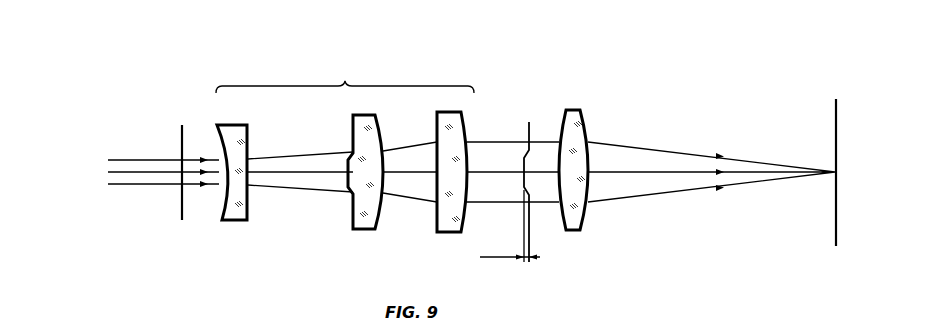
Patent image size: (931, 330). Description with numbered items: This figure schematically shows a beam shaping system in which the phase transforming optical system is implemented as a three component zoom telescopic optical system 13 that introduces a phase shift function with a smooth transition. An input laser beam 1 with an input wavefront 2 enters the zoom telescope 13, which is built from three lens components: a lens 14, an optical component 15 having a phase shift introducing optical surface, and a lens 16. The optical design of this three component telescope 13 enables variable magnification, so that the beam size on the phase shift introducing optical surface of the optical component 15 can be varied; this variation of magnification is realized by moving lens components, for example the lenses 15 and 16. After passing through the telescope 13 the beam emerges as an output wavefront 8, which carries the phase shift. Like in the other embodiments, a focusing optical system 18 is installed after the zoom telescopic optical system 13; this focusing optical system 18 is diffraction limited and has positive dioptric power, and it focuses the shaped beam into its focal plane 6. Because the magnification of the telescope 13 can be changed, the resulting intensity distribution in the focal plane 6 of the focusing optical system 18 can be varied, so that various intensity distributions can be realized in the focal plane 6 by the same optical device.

The input laser beam 1 is at (120, 192).
The input wavefront 2 is at (182, 218).
The three component zoom telescopic optical system 13 is at (345, 82).
The lens 14 is at (238, 219).
The optical component having an aspherical optical surface, phase shift optical surf 15 is at (352, 228).
The lens 16 is at (437, 231).
The output wavefront 8 is at (528, 215).
The focusing optical system 18 is at (587, 218).
The focal plane 6 is at (836, 212).